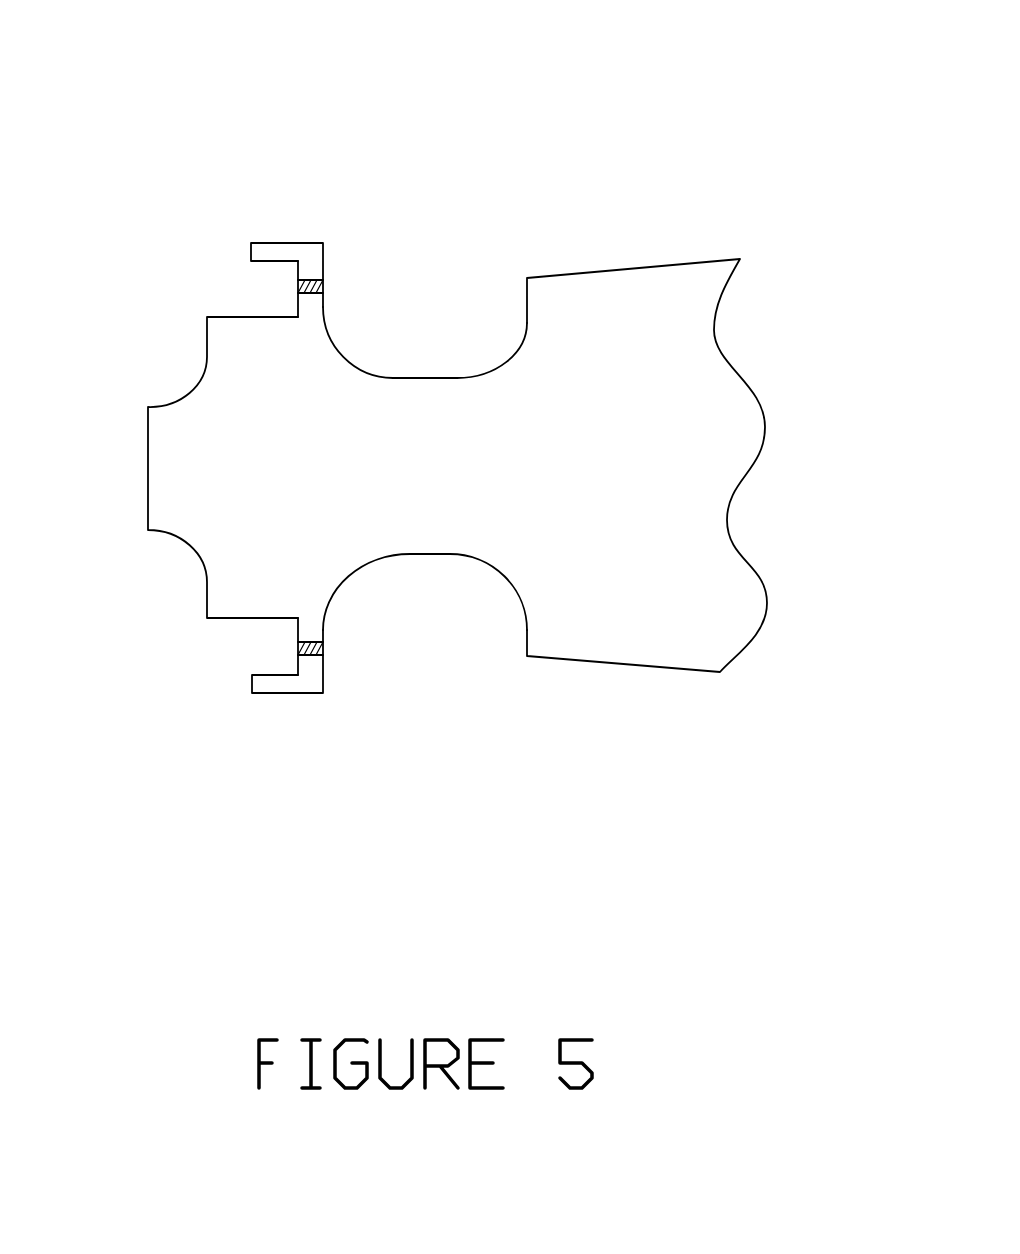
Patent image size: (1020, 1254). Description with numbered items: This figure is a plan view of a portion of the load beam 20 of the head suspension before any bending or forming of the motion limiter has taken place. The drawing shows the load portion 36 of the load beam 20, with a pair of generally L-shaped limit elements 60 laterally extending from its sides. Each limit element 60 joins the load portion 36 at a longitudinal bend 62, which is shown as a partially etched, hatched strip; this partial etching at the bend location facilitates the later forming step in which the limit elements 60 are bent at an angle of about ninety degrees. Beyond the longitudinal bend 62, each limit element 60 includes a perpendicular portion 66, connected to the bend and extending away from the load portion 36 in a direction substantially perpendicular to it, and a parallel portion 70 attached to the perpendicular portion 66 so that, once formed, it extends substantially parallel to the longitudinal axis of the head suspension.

The load beam 20 is at (703, 443).
The load portion 36 is at (337, 468).
The limit element 60 is at (297, 308).
The longitudinal bend 62 is at (325, 287).
The perpendicular portion 66 is at (313, 263).
The parallel portion 70 is at (260, 245).